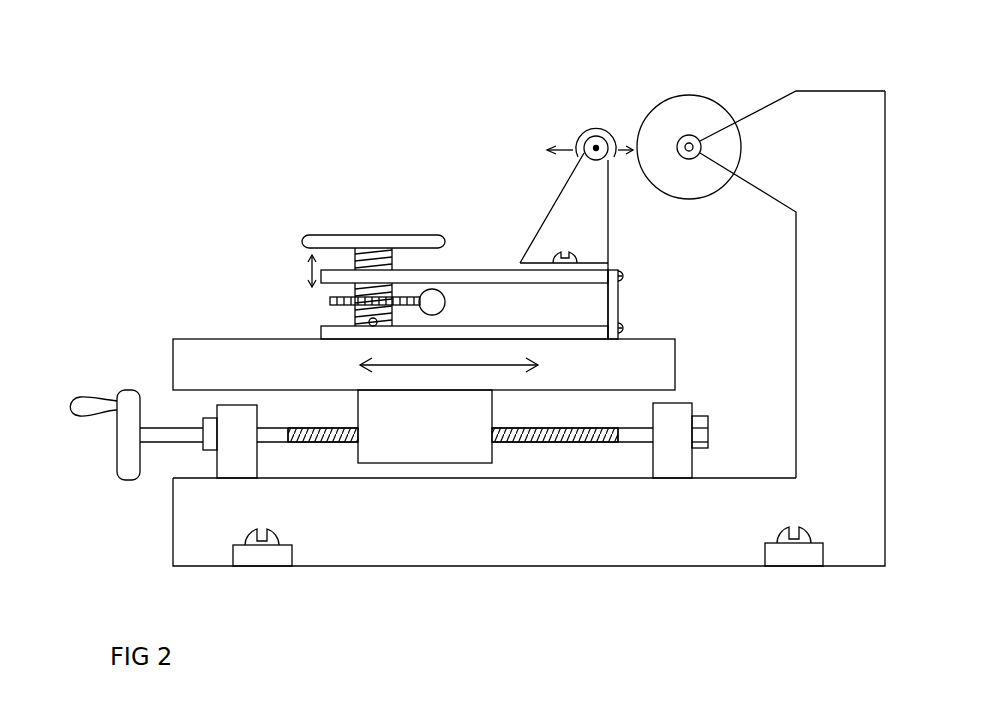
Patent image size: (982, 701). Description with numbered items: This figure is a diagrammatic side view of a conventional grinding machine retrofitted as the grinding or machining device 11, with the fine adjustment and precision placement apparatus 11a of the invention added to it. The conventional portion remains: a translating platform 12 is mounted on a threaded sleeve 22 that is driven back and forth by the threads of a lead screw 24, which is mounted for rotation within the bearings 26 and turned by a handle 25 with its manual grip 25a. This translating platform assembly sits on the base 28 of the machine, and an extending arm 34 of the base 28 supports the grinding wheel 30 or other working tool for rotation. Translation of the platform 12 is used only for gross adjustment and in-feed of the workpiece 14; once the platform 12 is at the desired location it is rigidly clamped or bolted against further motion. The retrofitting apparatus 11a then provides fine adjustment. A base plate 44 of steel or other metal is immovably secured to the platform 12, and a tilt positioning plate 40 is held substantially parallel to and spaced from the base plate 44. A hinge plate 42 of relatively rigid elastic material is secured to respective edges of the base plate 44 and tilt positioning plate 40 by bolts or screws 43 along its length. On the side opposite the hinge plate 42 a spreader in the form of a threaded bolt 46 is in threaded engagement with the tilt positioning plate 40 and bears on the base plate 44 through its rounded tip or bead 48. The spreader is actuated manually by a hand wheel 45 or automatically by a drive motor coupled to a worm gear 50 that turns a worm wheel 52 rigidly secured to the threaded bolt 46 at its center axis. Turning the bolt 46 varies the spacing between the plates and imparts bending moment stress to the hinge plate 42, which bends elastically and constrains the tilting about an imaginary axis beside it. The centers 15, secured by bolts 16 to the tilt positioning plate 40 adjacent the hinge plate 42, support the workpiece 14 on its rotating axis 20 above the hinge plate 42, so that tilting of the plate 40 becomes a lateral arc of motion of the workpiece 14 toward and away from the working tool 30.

The retrofitted grinding or machining device 11 is at (942, 172).
The retrofitting apparatus 11a is at (367, 190).
The translating platform 12 is at (286, 376).
The workpiece 14 is at (592, 128).
The centers 15 is at (555, 200).
The bolts 16 is at (578, 259).
The rotating axis 20 is at (597, 150).
The threaded sleeve 22 is at (434, 431).
The lead screw 24 is at (311, 429).
The handle 25 is at (117, 455).
The manual grip 25a is at (83, 397).
The bearings 26 is at (257, 462).
The base 28 is at (544, 531).
The grinding wheel 30 is at (683, 96).
The extending arm 34 is at (838, 91).
The tilt positioning plate 40 is at (474, 270).
The hinge plate 42 is at (620, 298).
The screws 43 is at (621, 276).
The base plate 44 is at (555, 326).
The hand wheel 45 is at (306, 234).
The threaded bolt 46 is at (352, 298).
The rounded tip or bead 48 is at (368, 322).
The worm gear 50 is at (446, 302).
The worm wheel 52 is at (330, 300).